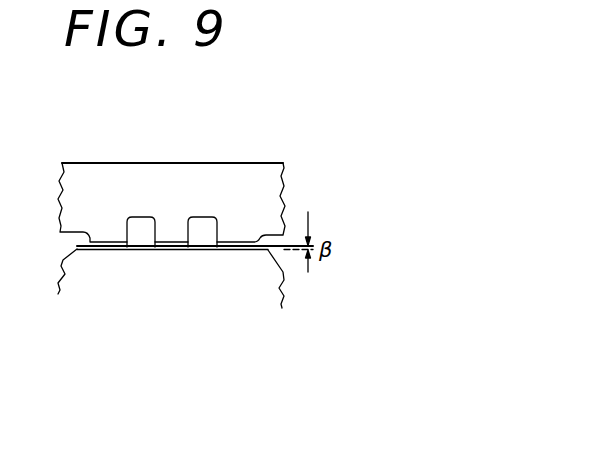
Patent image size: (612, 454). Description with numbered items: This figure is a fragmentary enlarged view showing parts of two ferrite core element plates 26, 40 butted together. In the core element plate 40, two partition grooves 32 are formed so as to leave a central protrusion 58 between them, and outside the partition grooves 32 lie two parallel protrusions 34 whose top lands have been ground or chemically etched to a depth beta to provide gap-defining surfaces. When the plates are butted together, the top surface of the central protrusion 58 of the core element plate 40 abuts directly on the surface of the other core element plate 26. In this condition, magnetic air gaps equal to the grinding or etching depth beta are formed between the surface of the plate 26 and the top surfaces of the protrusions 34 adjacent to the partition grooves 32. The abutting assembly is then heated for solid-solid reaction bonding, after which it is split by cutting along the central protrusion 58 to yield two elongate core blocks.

The core element plate 40 is at (251, 159).
The partition grooves 32 is at (129, 230).
The protrusions 34 is at (106, 238).
The central protrusion 58 is at (165, 239).
The core element plate 26 is at (252, 278).